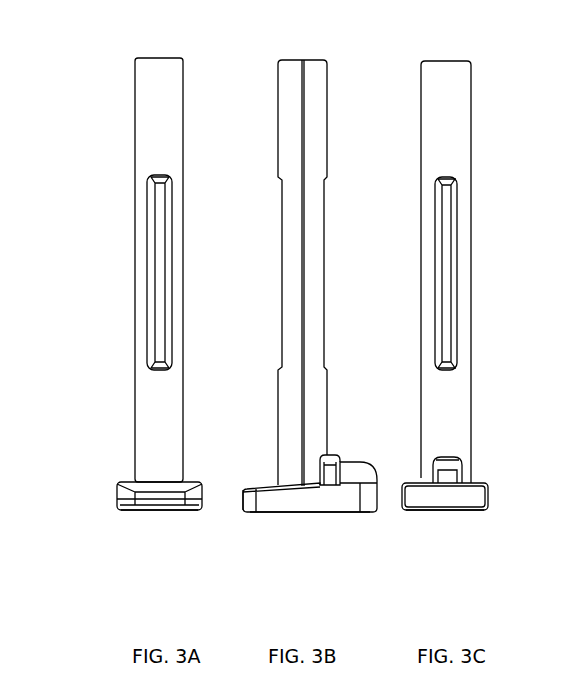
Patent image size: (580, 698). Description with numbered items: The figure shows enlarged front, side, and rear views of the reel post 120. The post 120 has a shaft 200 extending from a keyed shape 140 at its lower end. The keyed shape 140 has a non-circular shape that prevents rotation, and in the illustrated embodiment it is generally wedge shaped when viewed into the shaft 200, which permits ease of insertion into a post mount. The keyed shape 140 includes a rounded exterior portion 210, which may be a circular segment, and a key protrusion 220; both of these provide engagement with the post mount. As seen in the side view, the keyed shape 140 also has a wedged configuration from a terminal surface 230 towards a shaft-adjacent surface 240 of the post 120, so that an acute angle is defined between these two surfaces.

In FIG. 3A, the post 120 is at (121, 61).
In FIG. 3B, the post 120 is at (259, 62).
In FIG. 3C, the post 120 is at (409, 60).
In FIG. 3A, the keyed shape 140 is at (103, 482).
In FIG. 3B, the shaft 200 is at (303, 304).
In FIG. 3B, the rounded exterior portion 210 is at (382, 497).
In FIG. 3C, the rounded exterior portion 210 is at (433, 493).
In FIG. 3B, the key protrusion 220 is at (350, 467).
In FIG. 3C, the key protrusion 220 is at (440, 472).
In FIG. 3A, the terminal surface 230 is at (153, 512).
In FIG. 3B, the terminal surface 230 is at (280, 515).
In FIG. 3C, the terminal surface 230 is at (466, 512).
In FIG. 3B, the shaft-adjacent surface 240 is at (262, 485).
In FIG. 3C, the shaft-adjacent surface 240 is at (481, 481).